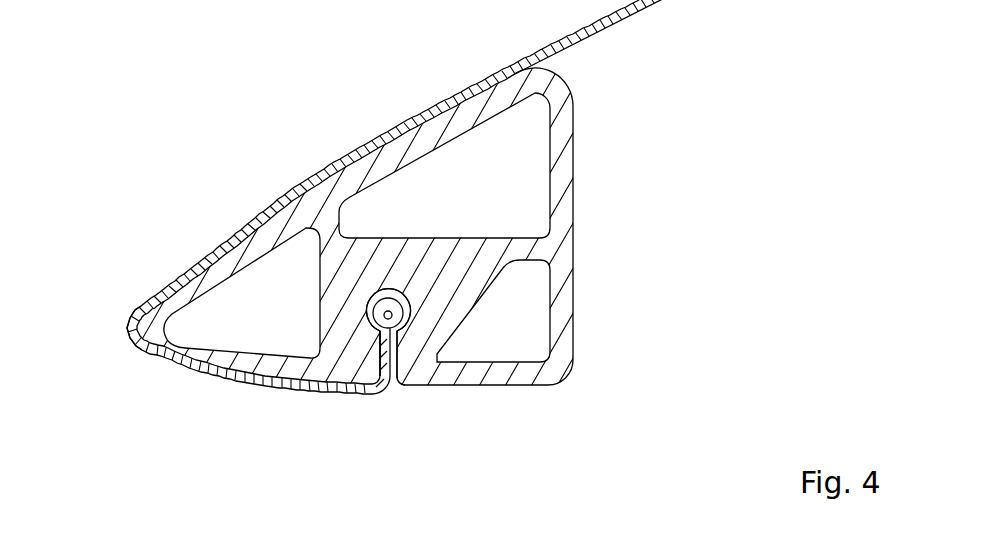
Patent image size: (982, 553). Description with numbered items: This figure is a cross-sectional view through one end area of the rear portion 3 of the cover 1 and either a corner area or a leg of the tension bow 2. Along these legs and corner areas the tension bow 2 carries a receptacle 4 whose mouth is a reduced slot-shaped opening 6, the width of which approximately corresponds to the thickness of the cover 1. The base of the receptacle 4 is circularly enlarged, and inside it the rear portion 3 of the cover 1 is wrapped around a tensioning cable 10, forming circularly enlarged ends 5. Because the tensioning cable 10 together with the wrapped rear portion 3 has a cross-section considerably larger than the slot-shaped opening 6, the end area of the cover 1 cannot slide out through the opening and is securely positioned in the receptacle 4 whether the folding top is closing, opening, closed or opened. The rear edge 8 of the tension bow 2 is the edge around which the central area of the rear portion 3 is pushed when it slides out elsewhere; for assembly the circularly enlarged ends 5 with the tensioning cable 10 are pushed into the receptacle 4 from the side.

The cover 1 is at (404, 248).
The tension bow 2 is at (560, 247).
The rear portion of cover 3 is at (385, 289).
The receptacle 4 is at (398, 390).
The circularly enlarged ends 5 is at (367, 289).
The slot-shaped opening 6 is at (377, 355).
The rear edge 8 is at (131, 340).
The tensioning cable 10 is at (390, 318).